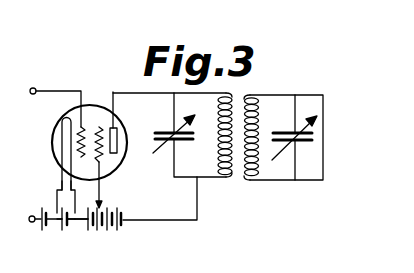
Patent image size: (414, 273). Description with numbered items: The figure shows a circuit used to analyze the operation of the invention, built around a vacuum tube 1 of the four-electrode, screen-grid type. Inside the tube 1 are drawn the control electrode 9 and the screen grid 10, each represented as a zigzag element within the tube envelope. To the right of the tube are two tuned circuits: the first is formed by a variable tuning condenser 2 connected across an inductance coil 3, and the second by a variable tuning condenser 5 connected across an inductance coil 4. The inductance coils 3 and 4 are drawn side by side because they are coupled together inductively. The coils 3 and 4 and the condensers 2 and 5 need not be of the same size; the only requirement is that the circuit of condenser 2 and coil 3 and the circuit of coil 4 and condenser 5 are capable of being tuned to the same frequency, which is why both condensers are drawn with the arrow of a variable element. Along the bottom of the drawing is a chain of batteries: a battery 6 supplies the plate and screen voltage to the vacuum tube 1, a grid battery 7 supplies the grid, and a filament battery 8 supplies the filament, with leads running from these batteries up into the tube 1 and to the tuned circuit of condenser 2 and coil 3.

The vacuum tube 1 is at (92, 102).
The variable tuning condenser 2 is at (174, 138).
The inductance coil 3 is at (226, 176).
The inductance coil 4 is at (252, 178).
The variable tuning condenser 5 is at (300, 142).
The battery 6 is at (102, 231).
The grid battery 7 is at (48, 229).
The filament battery 8 is at (59, 229).
The control electrode 9 is at (77, 123).
The screen grid 10 is at (101, 160).